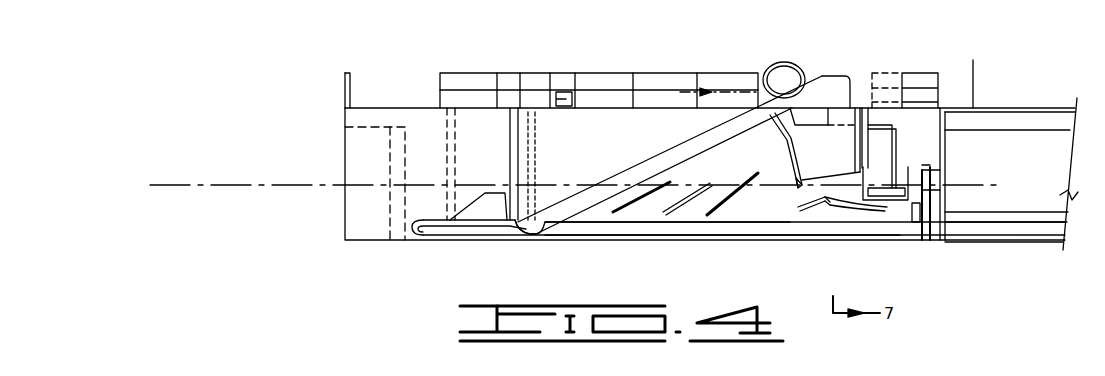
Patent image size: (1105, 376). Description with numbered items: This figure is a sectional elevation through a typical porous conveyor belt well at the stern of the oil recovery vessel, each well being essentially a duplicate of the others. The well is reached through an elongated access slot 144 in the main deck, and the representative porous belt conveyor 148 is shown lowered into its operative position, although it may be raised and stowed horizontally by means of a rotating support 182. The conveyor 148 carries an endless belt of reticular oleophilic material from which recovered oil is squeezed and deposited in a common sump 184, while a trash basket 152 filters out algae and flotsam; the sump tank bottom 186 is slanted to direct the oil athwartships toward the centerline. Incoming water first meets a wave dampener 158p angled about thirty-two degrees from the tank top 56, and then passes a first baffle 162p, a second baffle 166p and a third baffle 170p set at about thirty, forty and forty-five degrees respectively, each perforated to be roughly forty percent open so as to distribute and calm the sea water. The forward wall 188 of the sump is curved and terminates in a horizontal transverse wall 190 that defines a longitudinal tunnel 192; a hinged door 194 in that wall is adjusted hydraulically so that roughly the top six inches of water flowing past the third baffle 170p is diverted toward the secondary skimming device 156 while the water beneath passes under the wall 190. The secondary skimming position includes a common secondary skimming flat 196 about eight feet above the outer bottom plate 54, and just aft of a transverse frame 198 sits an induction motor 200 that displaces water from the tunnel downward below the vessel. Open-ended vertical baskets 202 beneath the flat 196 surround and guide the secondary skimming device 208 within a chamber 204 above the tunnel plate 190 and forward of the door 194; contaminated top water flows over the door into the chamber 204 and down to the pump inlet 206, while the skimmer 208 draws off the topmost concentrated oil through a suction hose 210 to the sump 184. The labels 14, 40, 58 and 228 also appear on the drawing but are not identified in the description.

The longitudinal centerline axis 14 is at (244, 190).
The housing 40 is at (345, 142).
The outer bottom plate 54 is at (632, 241).
The tank top 56 is at (760, 227).
The channel 58 is at (412, 236).
The access slot 144 is at (446, 108).
The porous belt conveyor 148 is at (662, 147).
The trash basket 152 is at (810, 120).
The secondary skimming device 156 is at (912, 108).
The wave dampener 158p is at (478, 196).
The first baffle 162p is at (625, 208).
The second baffle 166p is at (690, 208).
The third baffle 170p is at (735, 215).
The rotating support 182 is at (565, 92).
The sump 184 is at (838, 160).
The sump tank bottom 186 is at (795, 183).
The forward wall 188 is at (785, 145).
The horizontal transverse wall 190 is at (858, 209).
The longitudinal tunnel 192 is at (835, 206).
The hinged door 194 is at (800, 212).
The secondary skimming flat 196 is at (920, 167).
The transverse frame 198 is at (1009, 174).
The induction motor 200 is at (926, 240).
The baskets 202 is at (930, 190).
The chamber 204 is at (930, 170).
The pump inlet 206 is at (912, 212).
The secondary skimming device 208 is at (880, 188).
The suction hose 210 is at (930, 135).
The roller 228 is at (776, 66).